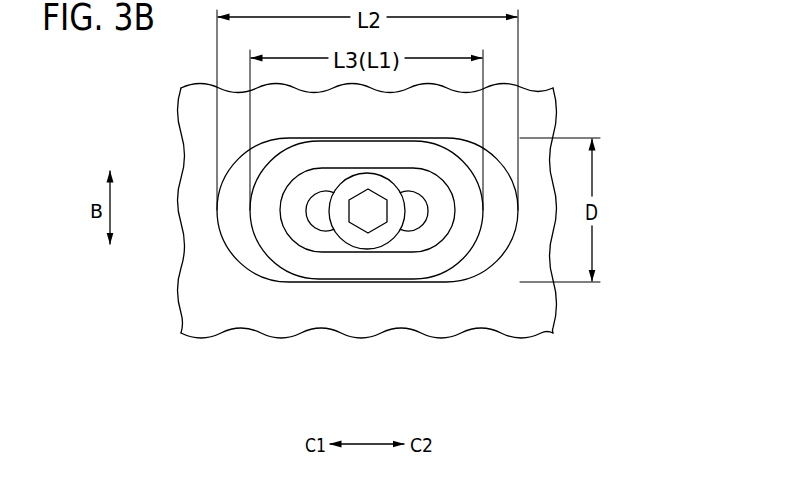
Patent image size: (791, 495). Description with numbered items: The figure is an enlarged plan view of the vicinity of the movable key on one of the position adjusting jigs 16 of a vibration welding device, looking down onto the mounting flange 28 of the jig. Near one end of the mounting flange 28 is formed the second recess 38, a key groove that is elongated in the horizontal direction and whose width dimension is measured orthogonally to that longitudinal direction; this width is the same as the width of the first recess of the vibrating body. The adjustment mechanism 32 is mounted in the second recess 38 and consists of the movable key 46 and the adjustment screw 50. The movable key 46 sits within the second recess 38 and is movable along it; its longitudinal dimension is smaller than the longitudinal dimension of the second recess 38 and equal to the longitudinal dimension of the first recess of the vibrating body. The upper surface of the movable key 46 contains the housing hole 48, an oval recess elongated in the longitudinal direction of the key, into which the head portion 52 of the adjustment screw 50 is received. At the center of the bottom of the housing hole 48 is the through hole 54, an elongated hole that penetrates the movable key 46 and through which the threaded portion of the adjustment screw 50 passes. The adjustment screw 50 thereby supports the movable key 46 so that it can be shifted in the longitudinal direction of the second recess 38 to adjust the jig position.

The position adjusting jig 16 is at (504, 349).
The mounting flange 28 is at (190, 134).
The adjustment mechanism 32 is at (325, 286).
The second recess 38 is at (242, 240).
The movable key 46 is at (270, 247).
The housing hole 48 is at (403, 240).
The adjustment screw 50 is at (373, 292).
The head portion 52 is at (368, 240).
The through hole 54 is at (318, 220).